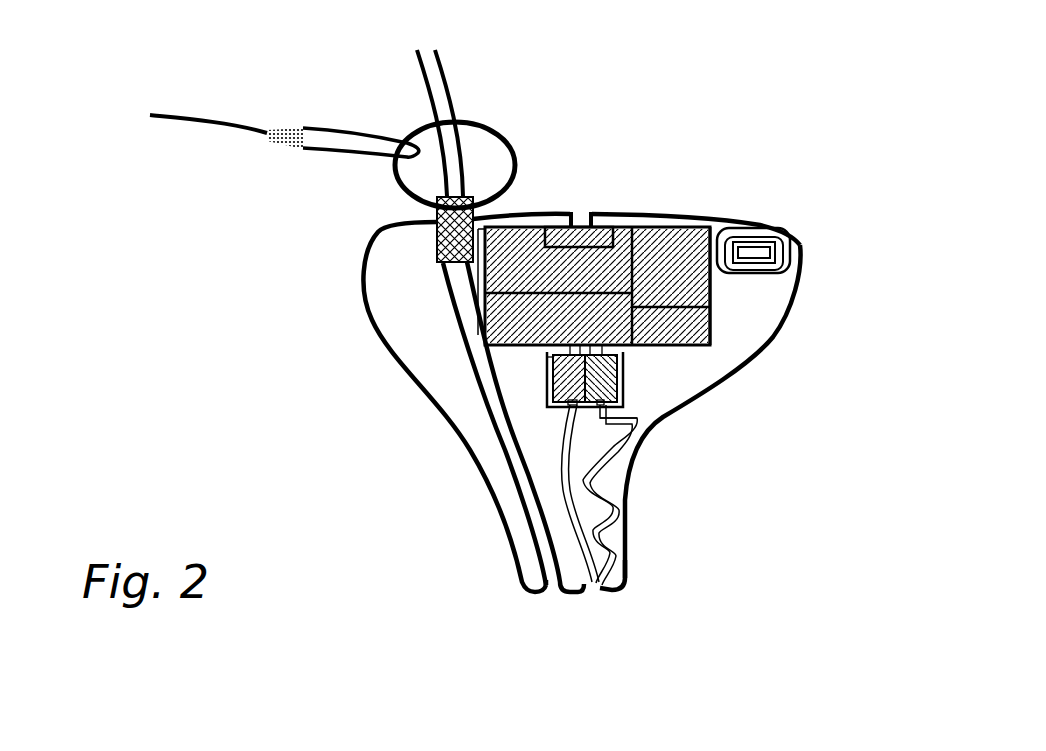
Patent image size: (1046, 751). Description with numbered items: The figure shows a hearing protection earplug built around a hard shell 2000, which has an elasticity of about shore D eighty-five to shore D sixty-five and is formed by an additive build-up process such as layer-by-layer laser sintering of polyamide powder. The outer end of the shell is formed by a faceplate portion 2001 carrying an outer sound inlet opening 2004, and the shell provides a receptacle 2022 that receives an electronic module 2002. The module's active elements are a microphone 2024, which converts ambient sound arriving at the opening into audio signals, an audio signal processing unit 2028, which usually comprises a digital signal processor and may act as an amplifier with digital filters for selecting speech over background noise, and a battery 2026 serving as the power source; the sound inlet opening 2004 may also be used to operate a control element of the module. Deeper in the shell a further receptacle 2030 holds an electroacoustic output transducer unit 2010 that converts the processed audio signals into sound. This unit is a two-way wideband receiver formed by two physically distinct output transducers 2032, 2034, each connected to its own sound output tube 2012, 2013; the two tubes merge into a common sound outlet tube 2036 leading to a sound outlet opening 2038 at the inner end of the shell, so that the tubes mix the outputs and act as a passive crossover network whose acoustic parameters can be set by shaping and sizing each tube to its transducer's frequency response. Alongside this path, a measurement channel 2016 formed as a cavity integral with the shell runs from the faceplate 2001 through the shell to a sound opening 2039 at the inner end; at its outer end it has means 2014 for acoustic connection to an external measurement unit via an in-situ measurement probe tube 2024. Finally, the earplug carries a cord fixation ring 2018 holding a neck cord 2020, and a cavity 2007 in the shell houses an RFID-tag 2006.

The hard shell 2000 is at (777, 335).
The faceplate portion 2001 is at (527, 213).
The electronic module 2002 is at (553, 217).
The outer sound inlet opening 2004 is at (607, 217).
The RFID-tag 2006 is at (777, 240).
The cavity 2007 is at (777, 233).
The electroacoustic output transducer unit 2010 is at (620, 394).
The sound output tube 2012 is at (583, 490).
The sound output tube 2013 is at (622, 442).
The means for being acoustically connected 2014 is at (440, 264).
The measurement channel 2016 is at (520, 476).
The cord fixation ring 2018 is at (393, 187).
The neck cord 2020 is at (347, 133).
The receptacle 2022 is at (713, 292).
The microphone 2024 is at (427, 82).
The battery 2026 is at (657, 222).
The audio signal processing unit 2028 is at (710, 307).
The receptacle 2030 is at (622, 357).
The output transducer 2032 is at (548, 360).
The output transducer 2034 is at (622, 376).
The common sound outlet tube 2036 is at (607, 587).
The sound outlet opening 2038 is at (597, 598).
The sound opening 2039 is at (553, 598).